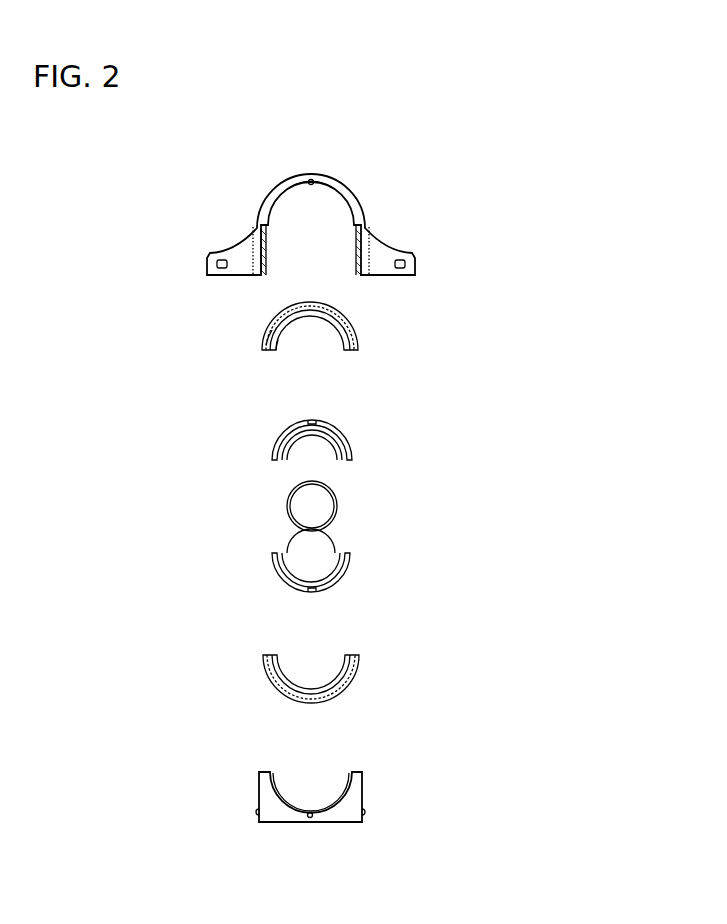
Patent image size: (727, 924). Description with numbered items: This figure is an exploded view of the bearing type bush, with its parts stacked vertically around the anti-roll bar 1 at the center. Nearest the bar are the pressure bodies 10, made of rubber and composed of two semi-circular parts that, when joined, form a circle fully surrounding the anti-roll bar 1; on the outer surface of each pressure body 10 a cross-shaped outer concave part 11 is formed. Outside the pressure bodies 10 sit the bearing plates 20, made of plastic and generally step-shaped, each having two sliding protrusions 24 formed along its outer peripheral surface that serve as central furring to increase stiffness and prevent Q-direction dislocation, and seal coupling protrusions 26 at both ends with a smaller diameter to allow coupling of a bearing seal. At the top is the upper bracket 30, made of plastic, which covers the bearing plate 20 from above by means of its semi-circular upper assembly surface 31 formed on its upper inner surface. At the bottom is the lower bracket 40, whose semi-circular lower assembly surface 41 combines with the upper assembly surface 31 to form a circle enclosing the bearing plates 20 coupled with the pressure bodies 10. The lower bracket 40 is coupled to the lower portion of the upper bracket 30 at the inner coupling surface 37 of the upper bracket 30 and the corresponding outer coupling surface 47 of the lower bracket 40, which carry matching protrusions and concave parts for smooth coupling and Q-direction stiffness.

The anti-roll bar 1 is at (337, 502).
The pressure body 10 is at (356, 434).
The outer concave part 11 is at (313, 419).
The bearing plate 20 is at (374, 323).
The sliding protrusion 24 is at (268, 330).
The seal coupling protrusion 26 is at (262, 340).
The upper bracket 30 is at (415, 220).
The upper assembly surface 31 is at (322, 207).
The inner coupling surface 37 is at (272, 258).
The lower bracket 40 is at (380, 792).
The lower assembly surface 41 is at (335, 790).
The outer coupling surface 47 is at (368, 802).